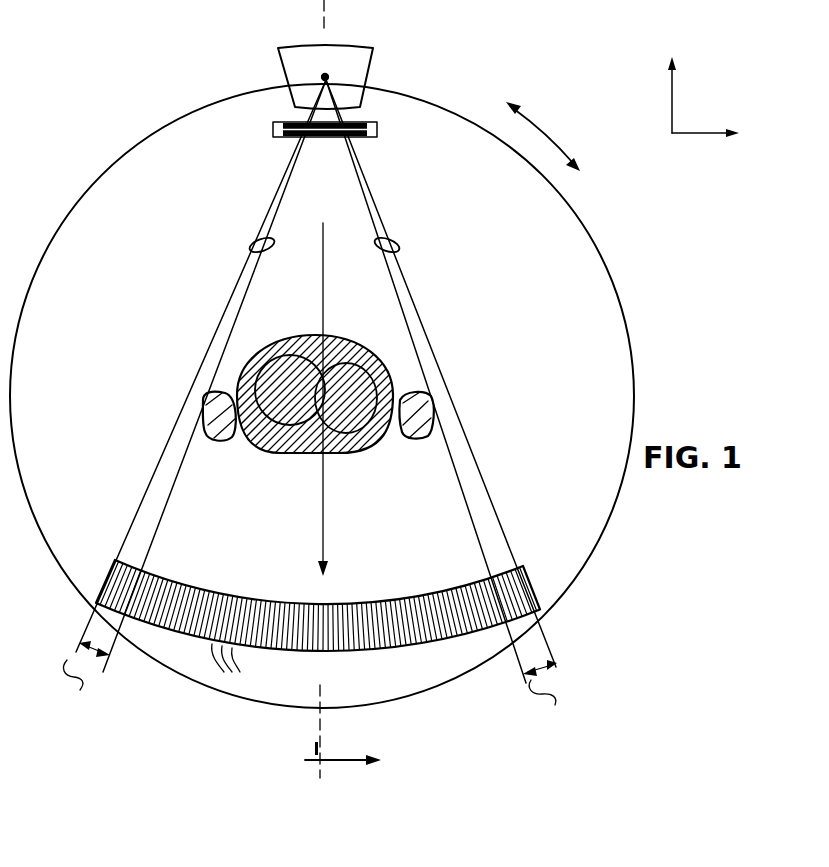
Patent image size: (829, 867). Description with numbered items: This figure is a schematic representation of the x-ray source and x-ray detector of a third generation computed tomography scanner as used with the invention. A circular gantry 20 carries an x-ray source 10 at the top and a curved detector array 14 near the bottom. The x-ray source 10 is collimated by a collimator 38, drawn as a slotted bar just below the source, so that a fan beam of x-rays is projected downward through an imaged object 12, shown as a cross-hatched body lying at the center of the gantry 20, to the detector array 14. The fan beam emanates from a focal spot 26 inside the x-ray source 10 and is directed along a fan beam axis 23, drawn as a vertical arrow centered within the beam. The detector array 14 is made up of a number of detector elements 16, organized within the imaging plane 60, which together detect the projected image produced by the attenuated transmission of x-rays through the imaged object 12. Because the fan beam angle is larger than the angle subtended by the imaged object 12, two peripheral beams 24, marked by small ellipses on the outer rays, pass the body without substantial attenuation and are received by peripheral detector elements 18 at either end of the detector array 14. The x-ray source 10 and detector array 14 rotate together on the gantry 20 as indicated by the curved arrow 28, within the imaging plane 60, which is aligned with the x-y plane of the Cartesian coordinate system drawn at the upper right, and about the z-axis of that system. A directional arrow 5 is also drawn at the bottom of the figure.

The x-ray source 10 is at (356, 72).
The focal spot 26 is at (322, 77).
The collimator 38 is at (378, 128).
The peripheral beams 24 is at (255, 240).
The imaged object 12 is at (372, 352).
The fan beam axis 23 is at (326, 519).
The gantry 20 is at (603, 323).
The detector array 14 is at (545, 580).
The detector elements 16 is at (235, 671).
The peripheral detector elements 18 is at (319, 688).
The arrow 28 is at (547, 128).
The imaging plane 60 is at (718, 203).
The section view arrow 5 is at (352, 760).